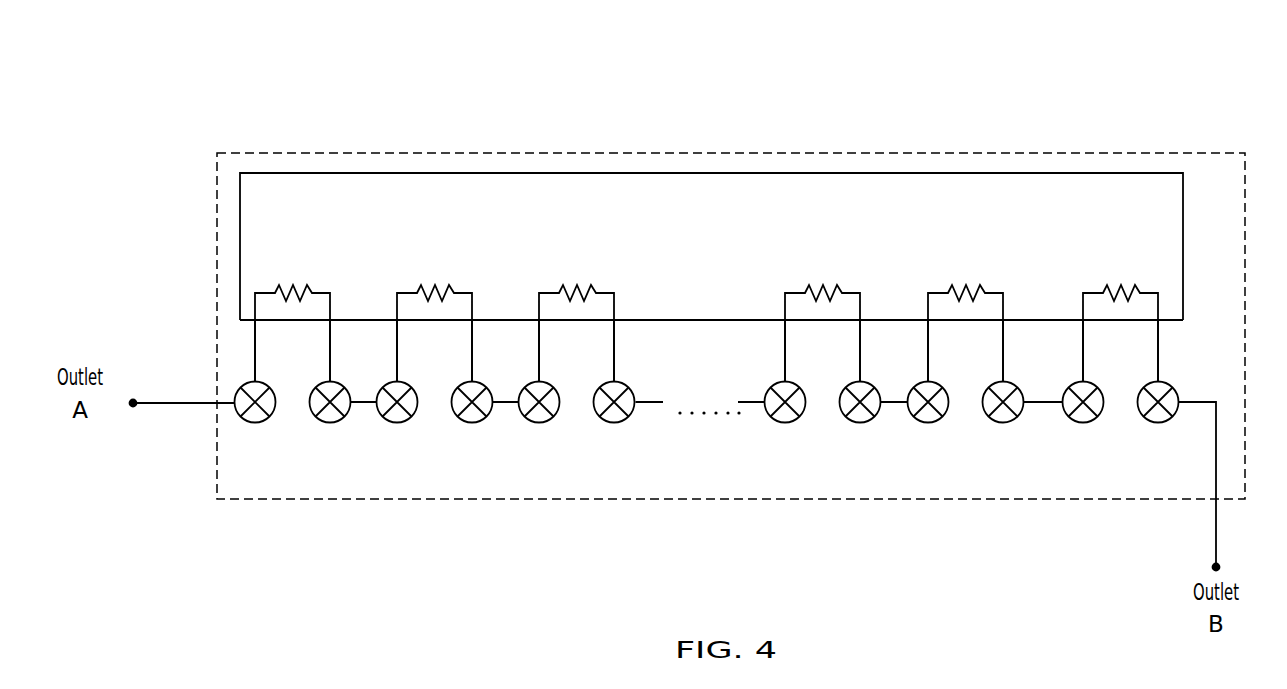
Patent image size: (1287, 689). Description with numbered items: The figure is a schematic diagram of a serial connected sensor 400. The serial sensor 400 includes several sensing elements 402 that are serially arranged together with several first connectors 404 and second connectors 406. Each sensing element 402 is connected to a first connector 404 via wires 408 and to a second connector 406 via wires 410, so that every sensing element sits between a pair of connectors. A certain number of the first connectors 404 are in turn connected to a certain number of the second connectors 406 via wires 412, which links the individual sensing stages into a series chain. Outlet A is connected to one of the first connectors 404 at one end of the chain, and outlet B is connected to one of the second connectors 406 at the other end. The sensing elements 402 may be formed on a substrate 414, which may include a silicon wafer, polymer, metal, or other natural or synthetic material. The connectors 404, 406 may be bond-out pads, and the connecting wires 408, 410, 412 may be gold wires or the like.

The serial connected sensor 400 is at (285, 99).
The sensing element 402 is at (303, 283).
The first connector 404 is at (1071, 448).
The second connector 406 is at (1146, 448).
The wires 408 is at (1109, 346).
The wires 410 is at (1184, 346).
The wires 412 is at (1035, 430).
The substrate 414 is at (730, 183).